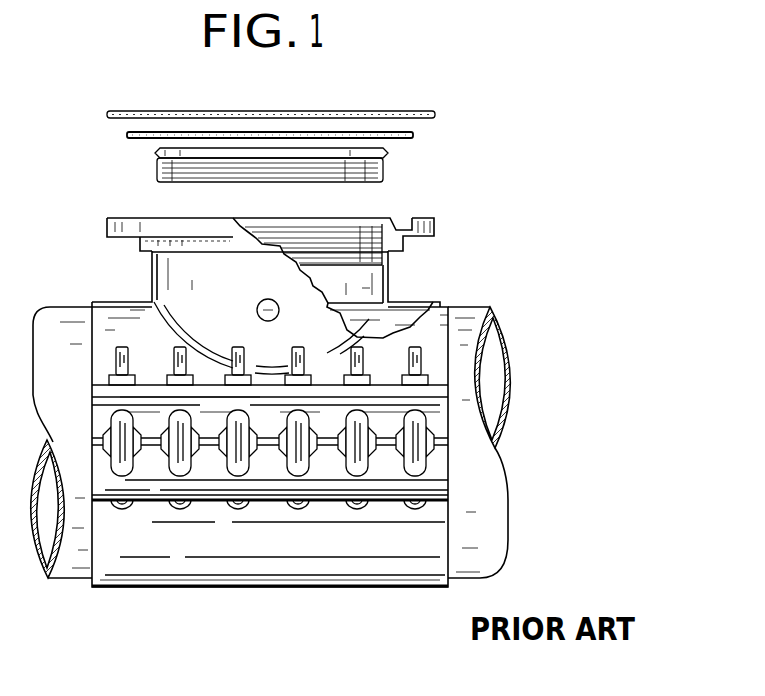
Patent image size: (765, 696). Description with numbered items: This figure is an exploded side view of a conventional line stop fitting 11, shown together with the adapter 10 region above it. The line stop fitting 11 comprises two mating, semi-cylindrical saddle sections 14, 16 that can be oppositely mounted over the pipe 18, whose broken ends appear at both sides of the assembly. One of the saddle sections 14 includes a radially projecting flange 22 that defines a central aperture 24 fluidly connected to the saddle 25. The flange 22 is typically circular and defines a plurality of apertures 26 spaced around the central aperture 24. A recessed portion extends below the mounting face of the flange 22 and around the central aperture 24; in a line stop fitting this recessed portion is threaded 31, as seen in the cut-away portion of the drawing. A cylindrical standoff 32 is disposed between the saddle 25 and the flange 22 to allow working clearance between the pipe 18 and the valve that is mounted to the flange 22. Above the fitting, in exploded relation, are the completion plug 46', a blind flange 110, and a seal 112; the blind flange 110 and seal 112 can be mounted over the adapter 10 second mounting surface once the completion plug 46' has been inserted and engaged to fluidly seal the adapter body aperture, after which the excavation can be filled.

The adapter 10 is at (457, 104).
The line stop fitting 11 is at (521, 246).
The blind flange 110 is at (176, 103).
The seal 112 is at (106, 134).
The insert bar 46' is at (237, 167).
The radially projecting flange 22 is at (107, 230).
The apertures 26 is at (414, 220).
The threaded recessed portion 31 is at (314, 224).
The cylindrical standoff 32 is at (152, 269).
The central aperture 24 is at (362, 288).
The saddle section 14 is at (443, 300).
The saddle 25 is at (167, 356).
The pipe 18 is at (72, 581).
The saddle section 16 is at (422, 589).